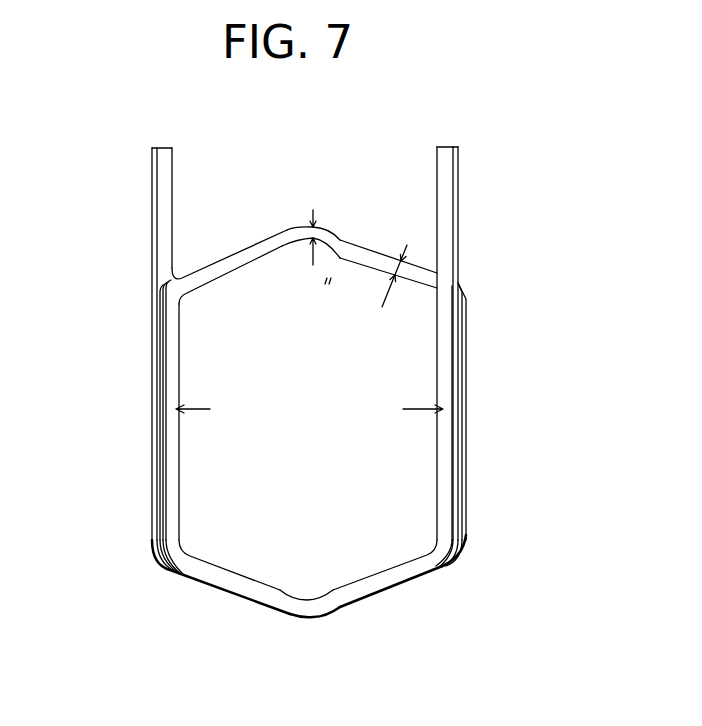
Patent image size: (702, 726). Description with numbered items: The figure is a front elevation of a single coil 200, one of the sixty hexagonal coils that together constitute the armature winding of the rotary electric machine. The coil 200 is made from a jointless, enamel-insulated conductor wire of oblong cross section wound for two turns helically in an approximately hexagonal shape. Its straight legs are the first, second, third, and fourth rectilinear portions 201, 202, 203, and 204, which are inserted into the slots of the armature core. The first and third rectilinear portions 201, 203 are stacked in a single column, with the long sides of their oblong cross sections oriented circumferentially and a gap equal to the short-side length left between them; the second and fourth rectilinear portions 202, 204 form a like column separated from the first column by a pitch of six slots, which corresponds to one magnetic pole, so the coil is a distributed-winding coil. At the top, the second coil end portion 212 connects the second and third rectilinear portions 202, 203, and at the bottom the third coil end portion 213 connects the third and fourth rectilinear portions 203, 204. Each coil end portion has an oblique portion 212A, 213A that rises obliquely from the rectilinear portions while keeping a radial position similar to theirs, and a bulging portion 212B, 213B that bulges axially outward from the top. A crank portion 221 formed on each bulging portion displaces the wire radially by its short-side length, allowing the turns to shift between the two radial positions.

The coil 200 is at (125, 117).
The first rectilinear portion 201 is at (155, 328).
The second rectilinear portion 202 is at (468, 332).
The third rectilinear portion 203 is at (168, 356).
The fourth rectilinear portion 204 is at (448, 367).
The second coil end portion 212 is at (330, 155).
The oblique portion 212A is at (237, 263).
The bulging portion 212B is at (295, 230).
The third coil end portion 213 is at (360, 495).
The oblique portion 213A is at (242, 575).
The bulging portion 213B is at (297, 610).
The crank portion 221 is at (312, 607).